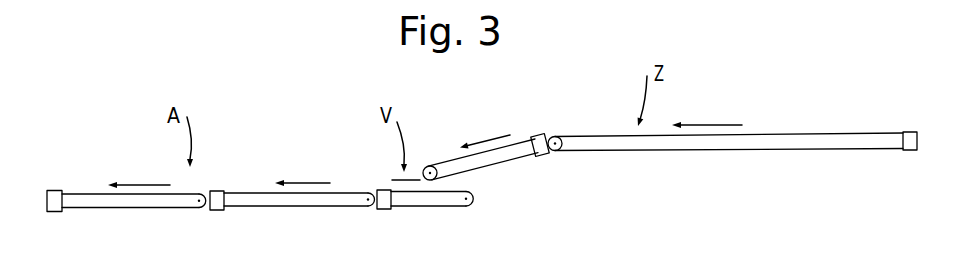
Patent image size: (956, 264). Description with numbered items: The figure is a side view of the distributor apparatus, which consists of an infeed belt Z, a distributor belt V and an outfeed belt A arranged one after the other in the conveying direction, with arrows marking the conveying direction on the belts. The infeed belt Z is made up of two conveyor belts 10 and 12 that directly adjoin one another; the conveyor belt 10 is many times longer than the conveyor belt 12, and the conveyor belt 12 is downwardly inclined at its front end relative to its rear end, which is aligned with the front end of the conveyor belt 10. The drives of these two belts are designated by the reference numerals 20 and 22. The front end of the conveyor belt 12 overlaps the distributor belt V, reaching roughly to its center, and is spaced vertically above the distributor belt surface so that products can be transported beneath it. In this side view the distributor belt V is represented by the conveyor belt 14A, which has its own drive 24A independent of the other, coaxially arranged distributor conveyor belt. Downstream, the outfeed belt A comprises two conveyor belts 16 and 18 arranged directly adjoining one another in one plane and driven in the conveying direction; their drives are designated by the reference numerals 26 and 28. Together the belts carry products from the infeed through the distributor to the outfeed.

The conveyor belt 10 is at (705, 150).
The conveyor belt 12 is at (505, 162).
The conveyor belt 14A is at (455, 207).
The conveyor belt 16 is at (298, 207).
The conveyor belt 18 is at (130, 209).
The drive 20 is at (905, 151).
The drive 22 is at (544, 156).
The drive 24A is at (383, 210).
The drive 26 is at (215, 211).
The drive 28 is at (55, 213).